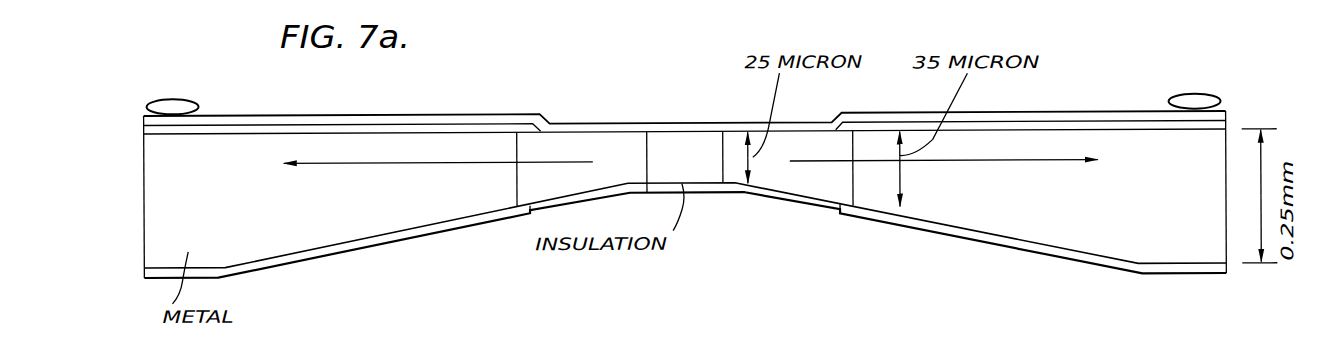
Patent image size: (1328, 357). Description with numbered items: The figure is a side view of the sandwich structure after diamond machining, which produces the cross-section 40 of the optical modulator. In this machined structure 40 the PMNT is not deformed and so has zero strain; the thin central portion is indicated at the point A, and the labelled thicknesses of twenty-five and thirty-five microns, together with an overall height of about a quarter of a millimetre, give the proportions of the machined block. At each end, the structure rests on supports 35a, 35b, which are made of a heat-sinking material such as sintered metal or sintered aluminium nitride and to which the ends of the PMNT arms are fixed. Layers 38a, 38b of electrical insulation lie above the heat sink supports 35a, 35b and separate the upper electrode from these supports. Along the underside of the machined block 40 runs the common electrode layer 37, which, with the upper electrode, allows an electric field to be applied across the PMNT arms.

The cross-section 40 is at (438, 113).
The layer of electrical insulation 38a is at (298, 130).
The layer of electrical insulation 38b is at (1088, 130).
The second electrode layer 37 is at (402, 239).
The support 35a is at (305, 238).
The support 35b is at (997, 226).
The section point A is at (688, 115).